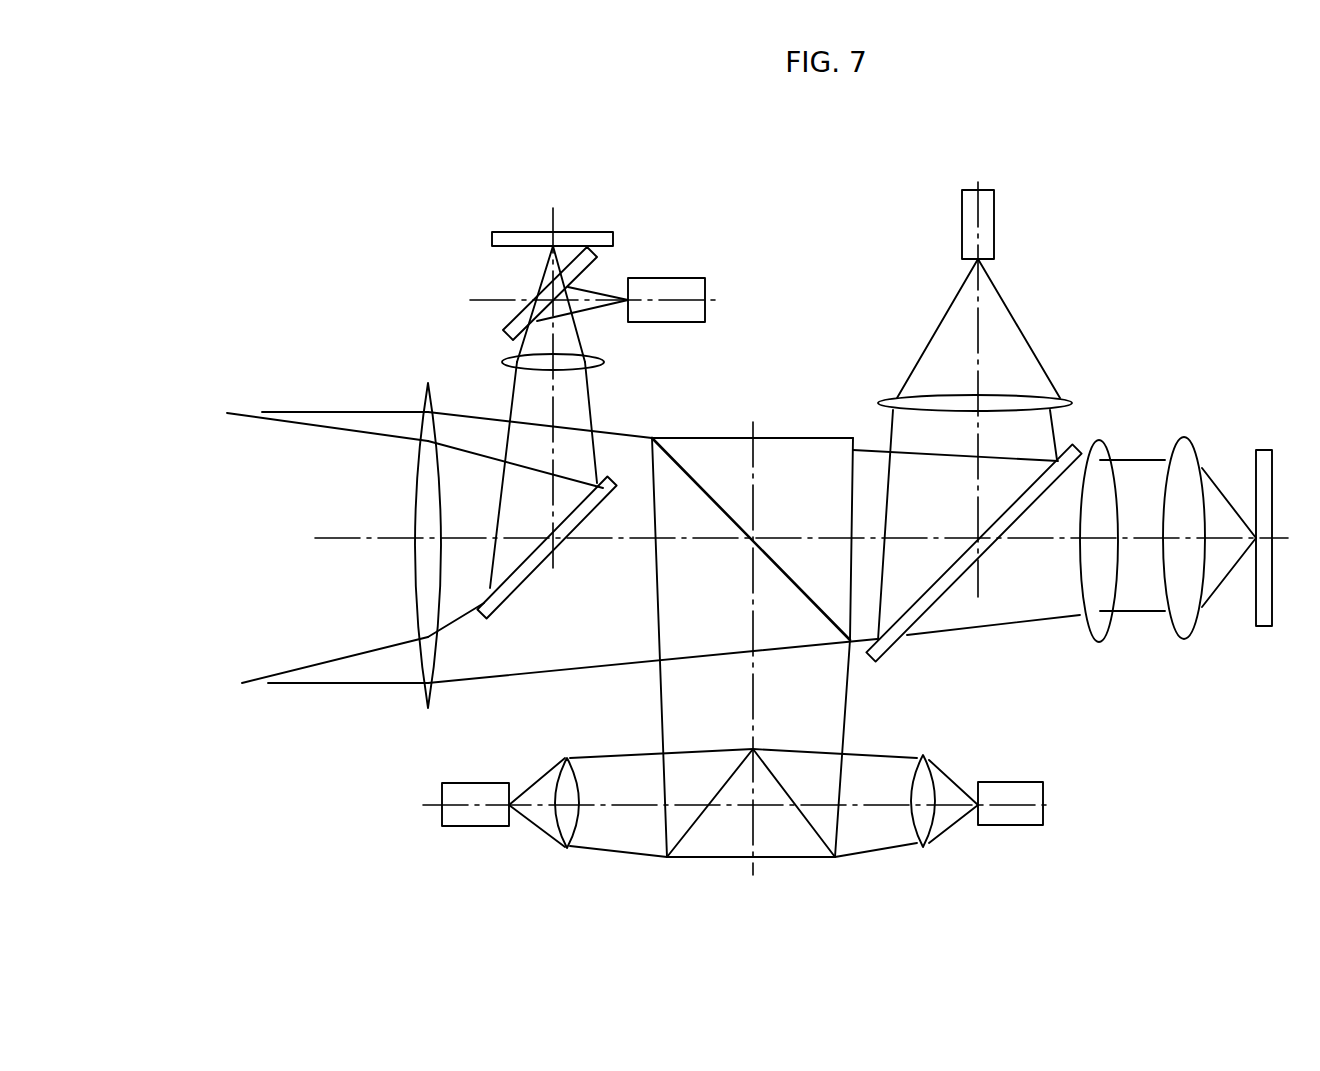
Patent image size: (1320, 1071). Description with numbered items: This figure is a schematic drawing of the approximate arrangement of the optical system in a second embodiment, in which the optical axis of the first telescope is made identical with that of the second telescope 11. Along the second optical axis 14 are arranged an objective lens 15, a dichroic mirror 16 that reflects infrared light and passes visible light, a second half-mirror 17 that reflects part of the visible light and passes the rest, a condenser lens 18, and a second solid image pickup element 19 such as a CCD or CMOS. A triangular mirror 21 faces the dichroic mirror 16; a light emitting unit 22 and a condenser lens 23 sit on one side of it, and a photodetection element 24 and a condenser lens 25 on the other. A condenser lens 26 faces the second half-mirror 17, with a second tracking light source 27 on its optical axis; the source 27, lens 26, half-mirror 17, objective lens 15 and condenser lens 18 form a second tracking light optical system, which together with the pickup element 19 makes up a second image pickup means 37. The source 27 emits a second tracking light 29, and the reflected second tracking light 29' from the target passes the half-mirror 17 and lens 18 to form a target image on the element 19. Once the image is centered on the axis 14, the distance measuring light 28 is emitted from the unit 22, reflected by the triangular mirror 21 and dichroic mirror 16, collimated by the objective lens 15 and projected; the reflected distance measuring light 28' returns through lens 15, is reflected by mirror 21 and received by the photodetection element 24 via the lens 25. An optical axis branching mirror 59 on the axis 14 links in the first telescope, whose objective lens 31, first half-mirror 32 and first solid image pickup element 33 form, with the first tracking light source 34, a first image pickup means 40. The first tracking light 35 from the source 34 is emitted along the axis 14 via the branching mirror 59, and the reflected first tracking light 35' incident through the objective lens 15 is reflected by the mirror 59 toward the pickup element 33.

The second telescope 11 is at (797, 407).
The second optical axis 14 is at (337, 537).
The objective lens 15 is at (420, 390).
The dichroic mirror 16 is at (730, 438).
The second half-mirror 17 is at (1053, 460).
The condenser lens 18 is at (1090, 655).
The second solid image pickup element 19 is at (1261, 630).
The triangular mirror 21 is at (797, 860).
The light emitting unit 22 is at (1012, 782).
The condenser lens 23 is at (927, 753).
The photodetection element 24 is at (478, 783).
The condenser lens 25 is at (567, 757).
The condenser lens 26 is at (1070, 398).
The second tracking light source 27 is at (996, 212).
The distance measuring light 28 is at (865, 839).
The reflected distance measuring light 28' is at (363, 677).
The second tracking light 29 is at (989, 449).
The reflected second tracking light 29' is at (572, 661).
The objective lens 31 is at (602, 353).
The first half-mirror 32 is at (503, 328).
The first solid image pickup element 33 is at (520, 230).
The first tracking light source 34 is at (662, 278).
The first tracking light 35 is at (590, 250).
The reflected first tracking light 35' is at (495, 451).
The second image pickup means 37 is at (1238, 414).
The first image pickup means 40 is at (636, 250).
The optical axis branching mirror 59 is at (513, 593).